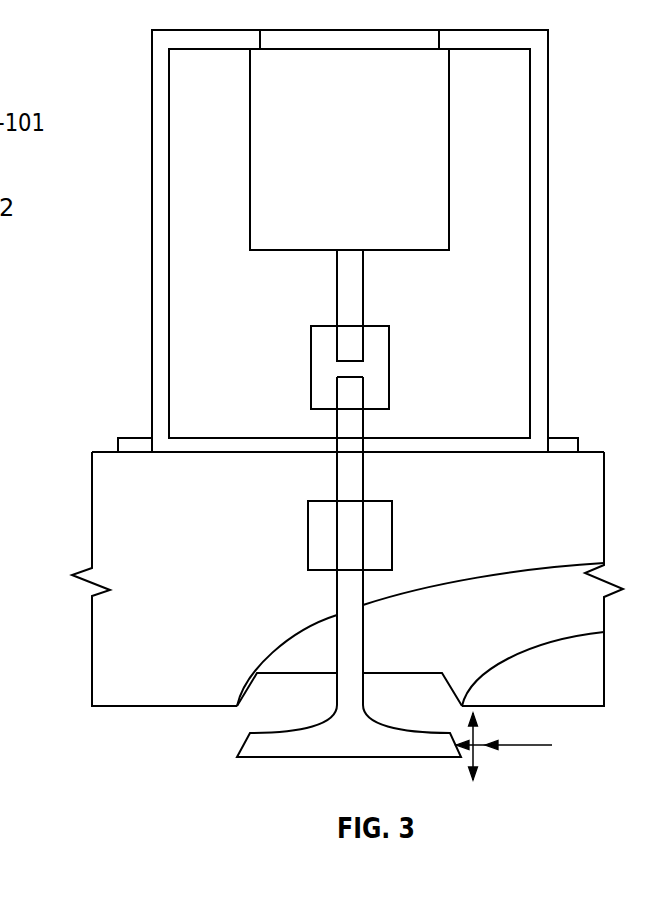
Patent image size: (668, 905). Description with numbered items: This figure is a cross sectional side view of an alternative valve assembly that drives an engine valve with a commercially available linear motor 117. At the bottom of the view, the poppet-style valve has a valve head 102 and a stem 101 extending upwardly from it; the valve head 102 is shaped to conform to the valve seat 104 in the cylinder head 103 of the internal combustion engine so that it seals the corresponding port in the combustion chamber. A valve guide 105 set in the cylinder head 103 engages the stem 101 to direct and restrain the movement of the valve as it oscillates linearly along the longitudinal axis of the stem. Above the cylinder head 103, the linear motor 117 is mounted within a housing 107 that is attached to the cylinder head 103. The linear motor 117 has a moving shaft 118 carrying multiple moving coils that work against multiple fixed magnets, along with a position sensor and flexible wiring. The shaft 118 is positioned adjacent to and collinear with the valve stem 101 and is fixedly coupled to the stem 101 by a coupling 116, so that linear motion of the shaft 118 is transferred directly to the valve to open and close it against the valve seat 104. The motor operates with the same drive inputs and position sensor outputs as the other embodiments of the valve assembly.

The valve stem 101 is at (369, 478).
The valve head 102 is at (532, 746).
The cylinder head 103 is at (127, 487).
The valve seat 104 is at (243, 685).
The valve guide 105 is at (392, 529).
The housing 107 is at (548, 78).
The coupling 116 is at (392, 389).
The linear motor 117 is at (450, 172).
The shaft 118 is at (369, 307).